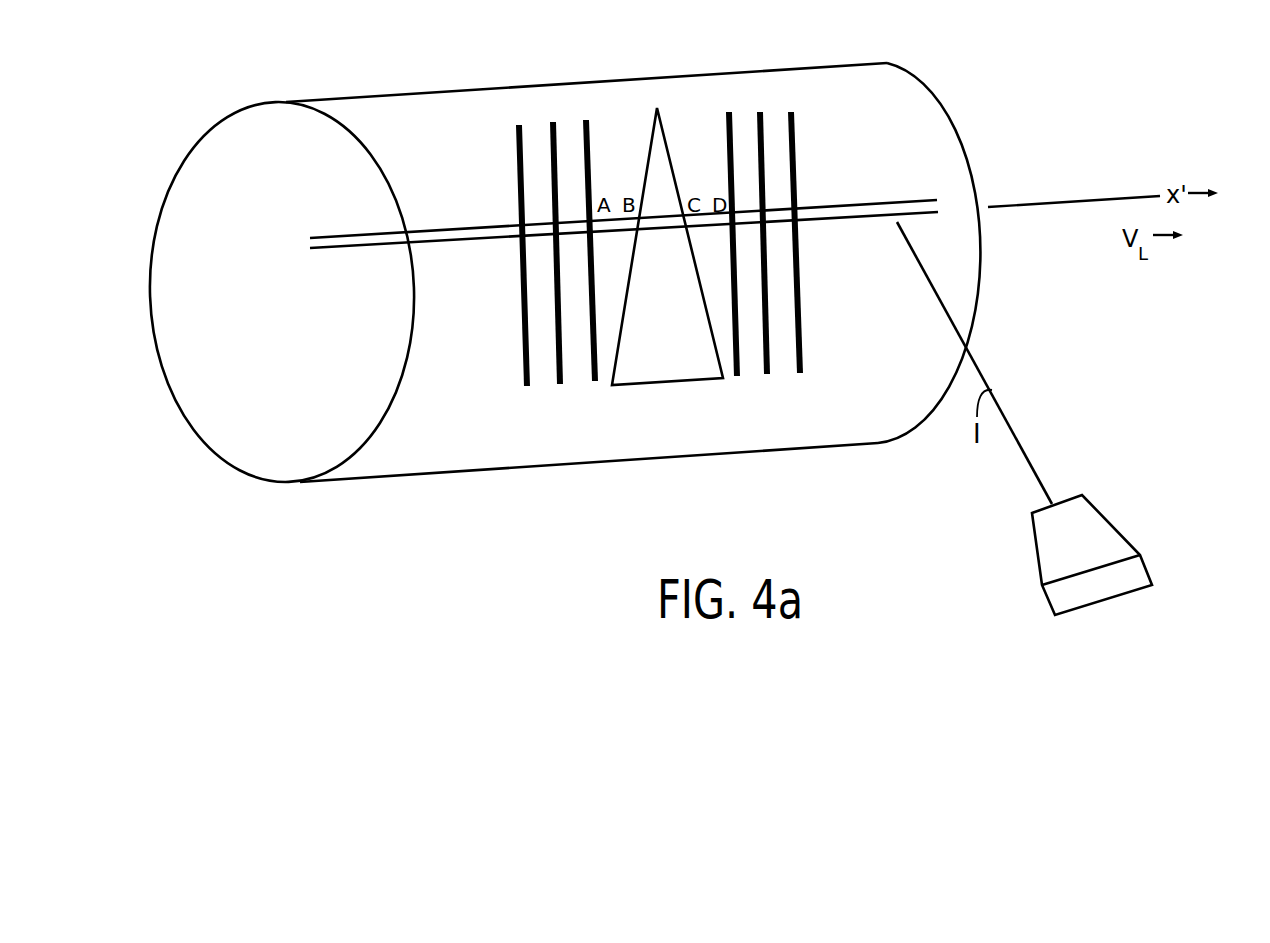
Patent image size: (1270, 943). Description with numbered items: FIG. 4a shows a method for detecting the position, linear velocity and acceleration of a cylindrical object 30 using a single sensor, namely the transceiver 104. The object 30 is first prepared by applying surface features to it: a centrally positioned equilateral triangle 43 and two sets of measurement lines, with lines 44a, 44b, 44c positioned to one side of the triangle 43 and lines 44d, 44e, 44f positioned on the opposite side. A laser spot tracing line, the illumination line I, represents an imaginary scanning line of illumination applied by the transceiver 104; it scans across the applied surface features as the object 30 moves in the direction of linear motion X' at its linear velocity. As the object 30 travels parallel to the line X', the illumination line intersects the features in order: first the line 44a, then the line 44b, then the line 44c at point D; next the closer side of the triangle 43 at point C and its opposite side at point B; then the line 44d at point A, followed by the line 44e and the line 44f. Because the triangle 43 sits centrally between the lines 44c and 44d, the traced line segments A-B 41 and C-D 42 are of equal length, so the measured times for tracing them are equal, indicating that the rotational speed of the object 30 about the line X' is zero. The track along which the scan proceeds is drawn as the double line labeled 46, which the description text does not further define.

The object 30 is at (663, 76).
The line segment (A-B) 41 is at (614, 232).
The line segment (C-D) 42 is at (714, 230).
The equilateral triangle 43 is at (659, 120).
The line 44a is at (800, 373).
The line 44b is at (767, 374).
The line 44c is at (737, 376).
The line 44d is at (595, 381).
The line 44e is at (560, 384).
The line 44f is at (527, 386).
The scan track 46 is at (340, 236).
The transceiver 104 is at (1110, 521).